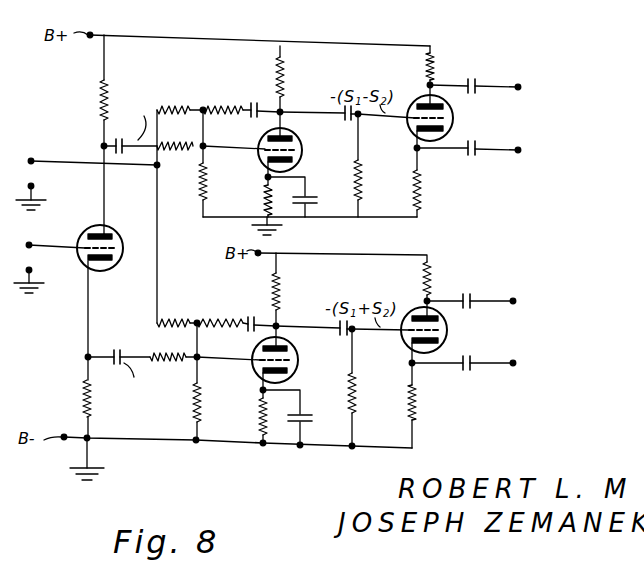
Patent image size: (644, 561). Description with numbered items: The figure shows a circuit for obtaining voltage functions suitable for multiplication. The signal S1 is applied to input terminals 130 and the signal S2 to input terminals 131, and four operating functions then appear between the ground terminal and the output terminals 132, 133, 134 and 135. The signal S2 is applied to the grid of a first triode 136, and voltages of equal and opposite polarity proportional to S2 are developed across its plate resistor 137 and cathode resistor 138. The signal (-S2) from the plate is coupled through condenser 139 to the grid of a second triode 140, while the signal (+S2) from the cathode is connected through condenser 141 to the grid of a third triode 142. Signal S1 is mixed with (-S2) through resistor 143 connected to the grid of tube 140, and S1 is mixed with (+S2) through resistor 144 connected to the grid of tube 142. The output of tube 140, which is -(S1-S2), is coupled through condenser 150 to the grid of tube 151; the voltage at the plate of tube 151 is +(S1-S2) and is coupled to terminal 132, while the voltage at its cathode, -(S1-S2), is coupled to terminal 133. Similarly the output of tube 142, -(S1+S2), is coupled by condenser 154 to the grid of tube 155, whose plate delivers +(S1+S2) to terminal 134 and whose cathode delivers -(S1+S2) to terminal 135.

The input terminals 130 is at (30, 176).
The input terminals 131 is at (30, 262).
The output terminal 132 is at (518, 85).
The output terminal 133 is at (518, 147).
The output terminal 134 is at (514, 298).
The output terminal 135 is at (514, 360).
The first triode 136 is at (100, 271).
The plate resistor 137 is at (100, 94).
The cathode resistor 138 is at (84, 393).
The condenser 139 is at (113, 155).
The second triode 140 is at (258, 160).
The condenser 141 is at (126, 345).
The third triode 142 is at (252, 374).
The resistor 143 is at (165, 110).
The resistor 144 is at (190, 320).
The condenser 150 is at (349, 122).
The tube 151 is at (410, 132).
The condenser 154 is at (346, 337).
The tube 155 is at (403, 342).